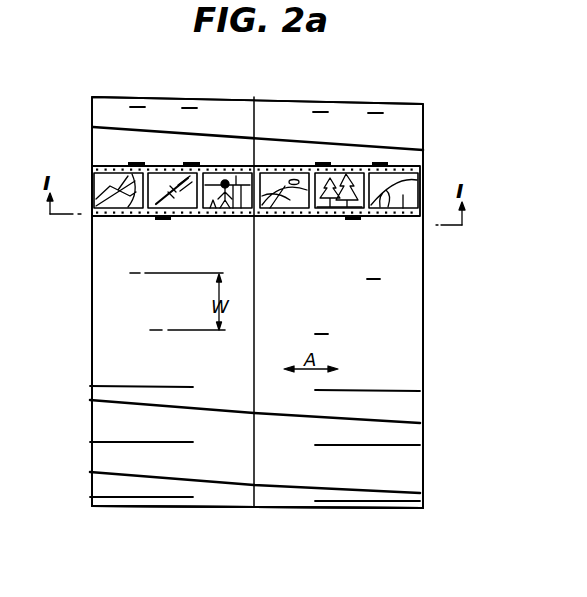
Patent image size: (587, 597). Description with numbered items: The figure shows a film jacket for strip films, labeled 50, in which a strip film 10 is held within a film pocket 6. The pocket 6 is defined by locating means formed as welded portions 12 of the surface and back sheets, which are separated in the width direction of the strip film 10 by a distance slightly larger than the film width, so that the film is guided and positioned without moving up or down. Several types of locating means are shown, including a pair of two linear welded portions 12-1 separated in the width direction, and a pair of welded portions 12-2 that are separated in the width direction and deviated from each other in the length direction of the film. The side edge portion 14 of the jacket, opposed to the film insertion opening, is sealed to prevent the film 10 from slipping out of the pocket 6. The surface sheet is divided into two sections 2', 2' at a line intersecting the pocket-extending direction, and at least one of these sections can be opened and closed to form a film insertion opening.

The film cassette housing 50 is at (124, 79).
The strip film 10 is at (403, 208).
The welded portions 12 is at (320, 112).
The linear welded portions 12-1 is at (393, 499).
The welded portions 12-2 is at (325, 334).
The film pocket 6 is at (135, 302).
The side edge portion 14 is at (423, 357).
The sections 2' is at (257, 514).